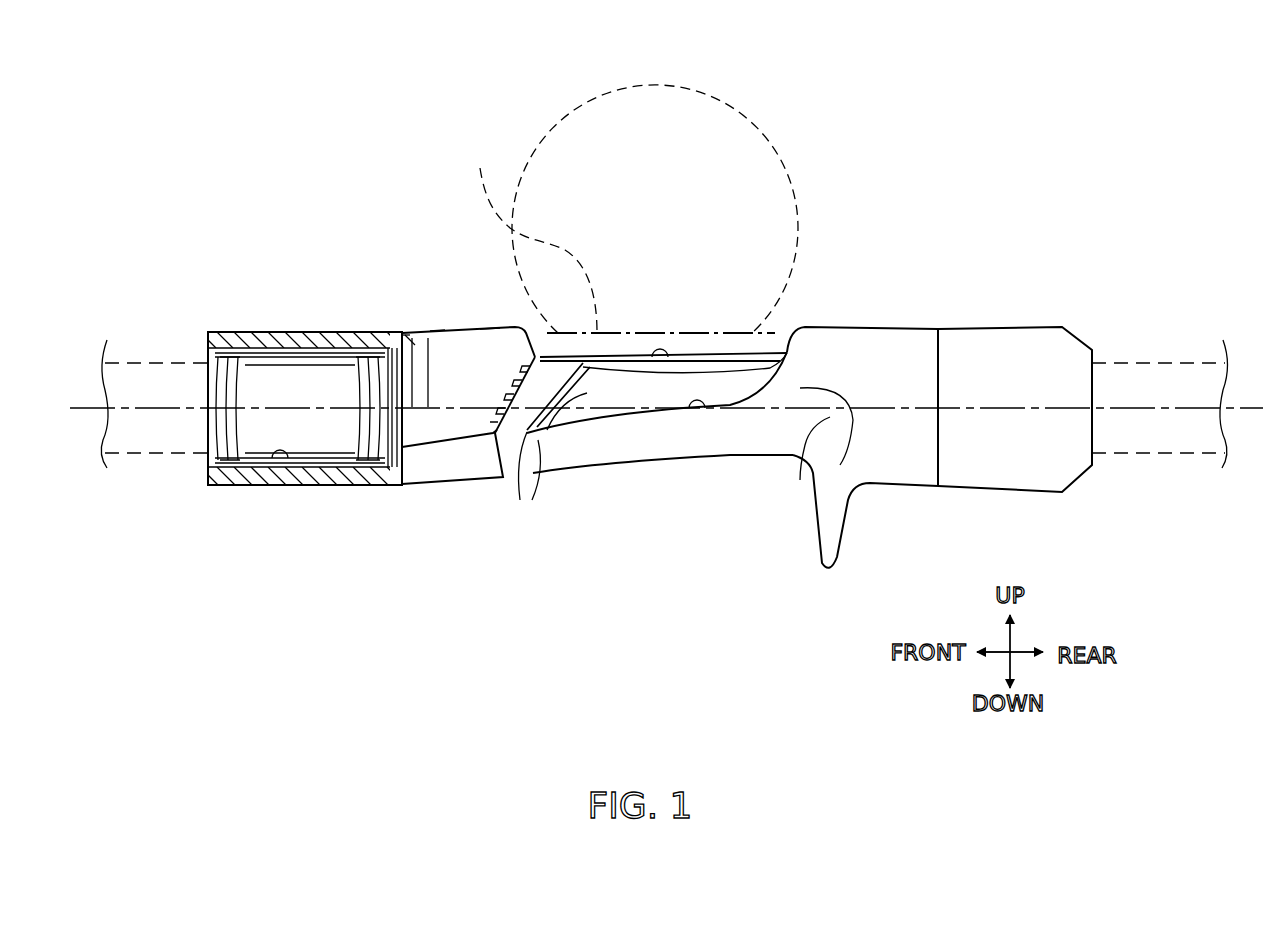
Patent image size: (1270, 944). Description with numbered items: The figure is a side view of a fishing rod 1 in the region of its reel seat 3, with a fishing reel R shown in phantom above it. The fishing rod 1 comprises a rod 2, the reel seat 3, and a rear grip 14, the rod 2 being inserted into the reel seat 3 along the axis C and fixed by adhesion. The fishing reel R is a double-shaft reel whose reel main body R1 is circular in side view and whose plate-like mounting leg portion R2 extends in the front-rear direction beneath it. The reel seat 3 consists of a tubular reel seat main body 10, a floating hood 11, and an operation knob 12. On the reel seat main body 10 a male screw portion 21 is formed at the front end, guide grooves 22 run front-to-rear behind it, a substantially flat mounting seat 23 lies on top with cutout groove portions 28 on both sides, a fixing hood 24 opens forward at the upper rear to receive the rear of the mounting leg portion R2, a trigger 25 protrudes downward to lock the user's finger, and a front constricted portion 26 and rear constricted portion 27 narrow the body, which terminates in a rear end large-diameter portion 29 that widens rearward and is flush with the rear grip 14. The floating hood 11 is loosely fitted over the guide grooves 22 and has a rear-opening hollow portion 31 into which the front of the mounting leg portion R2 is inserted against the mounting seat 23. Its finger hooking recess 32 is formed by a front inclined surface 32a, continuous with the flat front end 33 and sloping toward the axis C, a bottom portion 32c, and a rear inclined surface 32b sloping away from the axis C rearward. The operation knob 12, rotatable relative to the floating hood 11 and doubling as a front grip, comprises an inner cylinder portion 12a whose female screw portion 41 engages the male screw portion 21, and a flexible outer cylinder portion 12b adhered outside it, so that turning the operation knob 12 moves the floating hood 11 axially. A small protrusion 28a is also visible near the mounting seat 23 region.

The fishing rod 1 is at (203, 165).
The rod 2 is at (143, 352).
The reel seat 3 is at (725, 580).
The reel seat main body 10 is at (805, 431).
The floating hood 11 is at (438, 505).
The operation knob 12 is at (298, 343).
The inner cylinder portion 12a is at (234, 345).
The outer cylinder portion 12b is at (275, 332).
The rear grip 14 is at (1017, 328).
The male screw portion 21 is at (335, 486).
The guide groove 22 is at (533, 500).
The mounting seat 23 is at (653, 363).
The fixing hood 24 is at (787, 327).
The trigger 25 is at (833, 545).
The front constricted portion 26 is at (622, 457).
The rear constricted portion 27 is at (813, 457).
The cutout groove portion 28 is at (593, 403).
The protrusion 28a is at (703, 410).
The rear end large-diameter portion 29 is at (935, 328).
The hollow portion 31 is at (550, 330).
The finger hooking recess 32 is at (436, 319).
The front inclined surface 32a is at (423, 330).
The rear inclined surface 32b is at (487, 330).
The bottom portion 32c is at (435, 330).
The front end 33 is at (410, 322).
The female screw portion 41 is at (280, 470).
The fishing reel R is at (770, 138).
The reel main body R1 is at (540, 140).
The mounting leg portion R2 is at (530, 236).
The axis C is at (1245, 408).